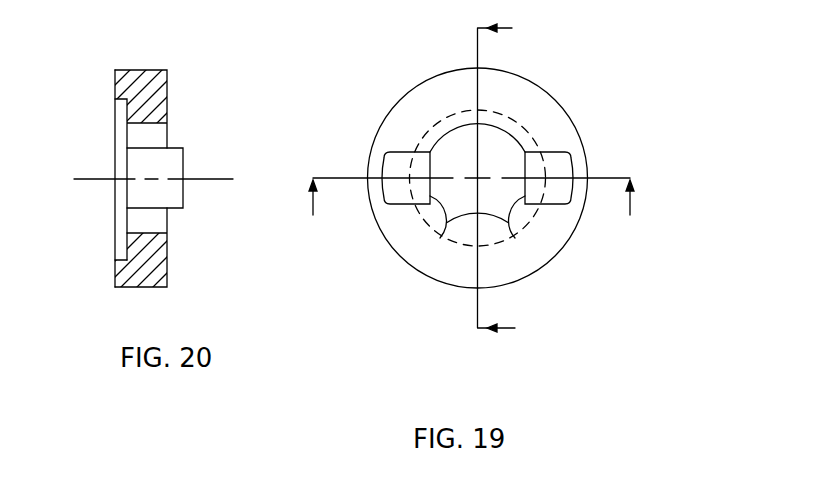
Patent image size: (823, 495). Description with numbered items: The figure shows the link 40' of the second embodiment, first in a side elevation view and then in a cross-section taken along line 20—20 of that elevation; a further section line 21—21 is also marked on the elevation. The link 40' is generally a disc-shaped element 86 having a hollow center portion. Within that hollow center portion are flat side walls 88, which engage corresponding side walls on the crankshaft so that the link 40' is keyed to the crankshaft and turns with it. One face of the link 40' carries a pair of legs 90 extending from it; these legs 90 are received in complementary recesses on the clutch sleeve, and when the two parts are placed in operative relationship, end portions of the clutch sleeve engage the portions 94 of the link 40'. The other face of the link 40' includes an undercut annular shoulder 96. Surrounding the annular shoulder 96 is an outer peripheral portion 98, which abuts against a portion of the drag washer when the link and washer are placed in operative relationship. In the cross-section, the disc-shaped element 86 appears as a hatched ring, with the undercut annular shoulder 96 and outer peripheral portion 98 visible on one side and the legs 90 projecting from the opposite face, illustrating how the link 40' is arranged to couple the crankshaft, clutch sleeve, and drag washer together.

In FIG. 20, the link 40' is at (78, 337).
In FIG. 19, the link 40' is at (646, 302).
In FIG. 20, the disc-shaped element 86 is at (142, 80).
In FIG. 19, the disc-shaped element 86 is at (465, 292).
In FIG. 19, the flat side walls 88 is at (440, 238).
In FIG. 20, the legs 90 is at (175, 162).
In FIG. 19, the legs 90 is at (400, 163).
In FIG. 19, the portions 94 is at (522, 127).
In FIG. 20, the undercut annular shoulder 96 is at (125, 232).
In FIG. 20, the outer peripheral portion 98 is at (115, 80).
In FIG. 19, the section line 20— 20 is at (515, 180).
In FIG. 19, the section line 21- 21 is at (474, 211).